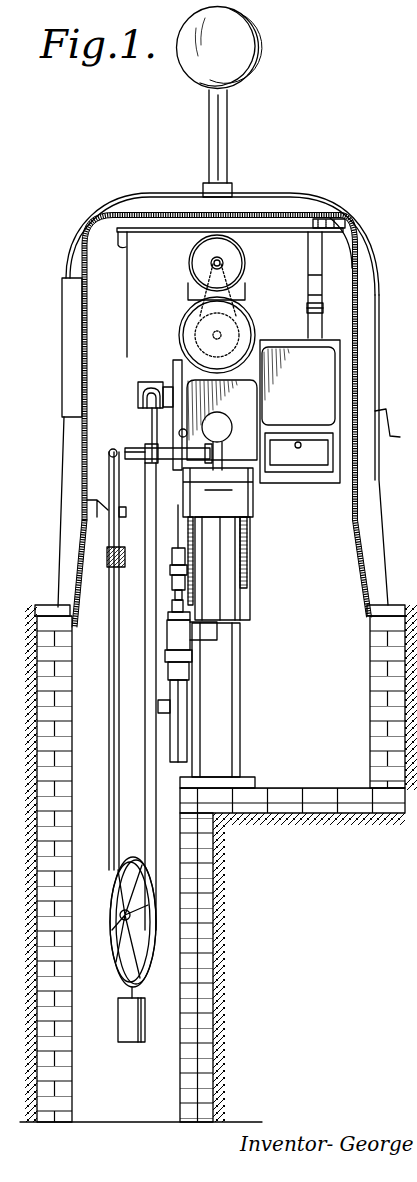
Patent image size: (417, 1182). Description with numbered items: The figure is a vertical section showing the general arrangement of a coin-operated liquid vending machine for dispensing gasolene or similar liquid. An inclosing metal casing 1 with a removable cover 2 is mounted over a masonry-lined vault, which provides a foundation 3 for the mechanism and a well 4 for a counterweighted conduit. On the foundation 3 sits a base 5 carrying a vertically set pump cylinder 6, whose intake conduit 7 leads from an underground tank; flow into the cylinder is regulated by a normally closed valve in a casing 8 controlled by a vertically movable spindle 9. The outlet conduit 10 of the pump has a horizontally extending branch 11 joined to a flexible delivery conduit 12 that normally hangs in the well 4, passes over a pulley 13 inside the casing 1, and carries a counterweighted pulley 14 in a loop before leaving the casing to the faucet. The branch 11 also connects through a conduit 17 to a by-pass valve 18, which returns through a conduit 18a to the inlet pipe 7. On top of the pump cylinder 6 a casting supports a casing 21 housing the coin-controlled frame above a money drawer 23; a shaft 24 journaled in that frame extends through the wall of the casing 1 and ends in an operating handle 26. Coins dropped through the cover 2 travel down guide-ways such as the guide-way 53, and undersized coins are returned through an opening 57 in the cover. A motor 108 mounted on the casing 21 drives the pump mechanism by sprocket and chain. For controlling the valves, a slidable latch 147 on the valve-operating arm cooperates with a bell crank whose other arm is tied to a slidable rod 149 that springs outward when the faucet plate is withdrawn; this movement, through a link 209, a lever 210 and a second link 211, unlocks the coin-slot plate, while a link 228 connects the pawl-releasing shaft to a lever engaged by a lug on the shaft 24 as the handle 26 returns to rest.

The inclosing metal casing 1 is at (75, 540).
The removable cover 2 is at (358, 322).
The foundation 3 is at (287, 792).
The well 4 is at (218, 863).
The base 5 is at (216, 700).
The pump cylinder 6 is at (218, 548).
The intake conduit 7 is at (173, 740).
The valve casing 8 is at (191, 650).
The spindle 9 is at (175, 598).
The outlet conduit 10 is at (222, 448).
The horizontally extending branch 11 is at (170, 462).
The flexible delivery conduit 12 is at (109, 455).
The pulley 13 is at (112, 543).
The counterweighted pulley 14 is at (115, 901).
The conduit 17 is at (152, 418).
The by-pass valve 18 is at (146, 382).
The conduit 18a is at (160, 708).
The casing 21 is at (288, 342).
The money drawer 23 is at (299, 452).
The shaft 24 is at (335, 412).
The operating handle 26 is at (388, 423).
The guide-way 53 is at (310, 266).
The opening 57 is at (315, 313).
The motor 108 is at (200, 250).
The slidable latch 147 is at (177, 526).
The slidable rod 149 is at (131, 452).
The link 209 is at (128, 301).
The lever 210 is at (126, 242).
The second link 211 is at (276, 228).
The link 228 is at (345, 292).